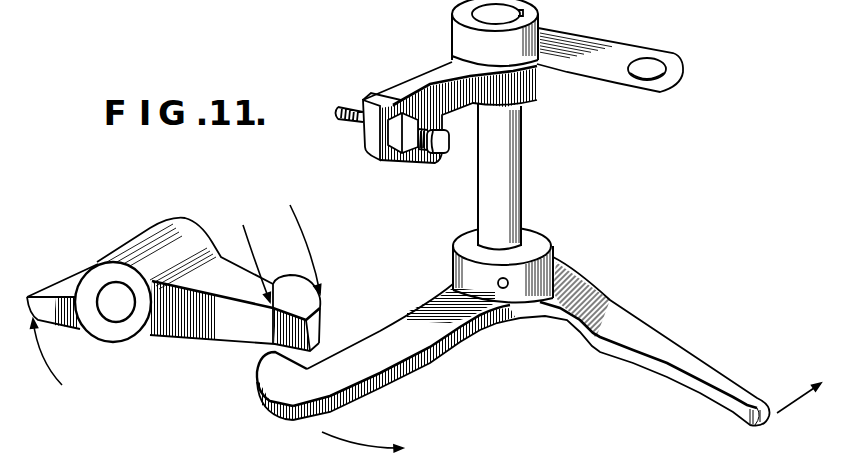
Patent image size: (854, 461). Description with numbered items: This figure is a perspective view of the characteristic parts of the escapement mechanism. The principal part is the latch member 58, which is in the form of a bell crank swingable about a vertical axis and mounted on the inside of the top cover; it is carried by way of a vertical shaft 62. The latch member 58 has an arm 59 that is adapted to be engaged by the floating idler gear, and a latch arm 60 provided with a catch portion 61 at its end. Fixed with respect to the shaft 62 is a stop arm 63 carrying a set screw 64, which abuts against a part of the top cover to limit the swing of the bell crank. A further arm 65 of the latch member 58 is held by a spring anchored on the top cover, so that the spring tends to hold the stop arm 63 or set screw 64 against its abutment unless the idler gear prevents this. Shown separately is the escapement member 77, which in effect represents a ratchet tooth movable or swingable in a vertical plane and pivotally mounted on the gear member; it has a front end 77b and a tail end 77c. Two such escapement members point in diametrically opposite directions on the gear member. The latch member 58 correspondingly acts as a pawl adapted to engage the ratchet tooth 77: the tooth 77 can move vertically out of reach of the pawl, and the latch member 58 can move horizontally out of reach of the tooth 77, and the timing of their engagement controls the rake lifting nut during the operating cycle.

The latch member 58 is at (524, 134).
The arm 59 is at (668, 372).
The latch arm 60 is at (436, 352).
The catch portion 61 is at (265, 403).
The vertical shaft 62 is at (522, 168).
The stop arm 63 is at (398, 77).
The set screw 64 is at (352, 124).
The arm 65 is at (680, 67).
The escapement member 77 is at (197, 332).
The front end 77b is at (233, 272).
The tail end 77c is at (73, 272).